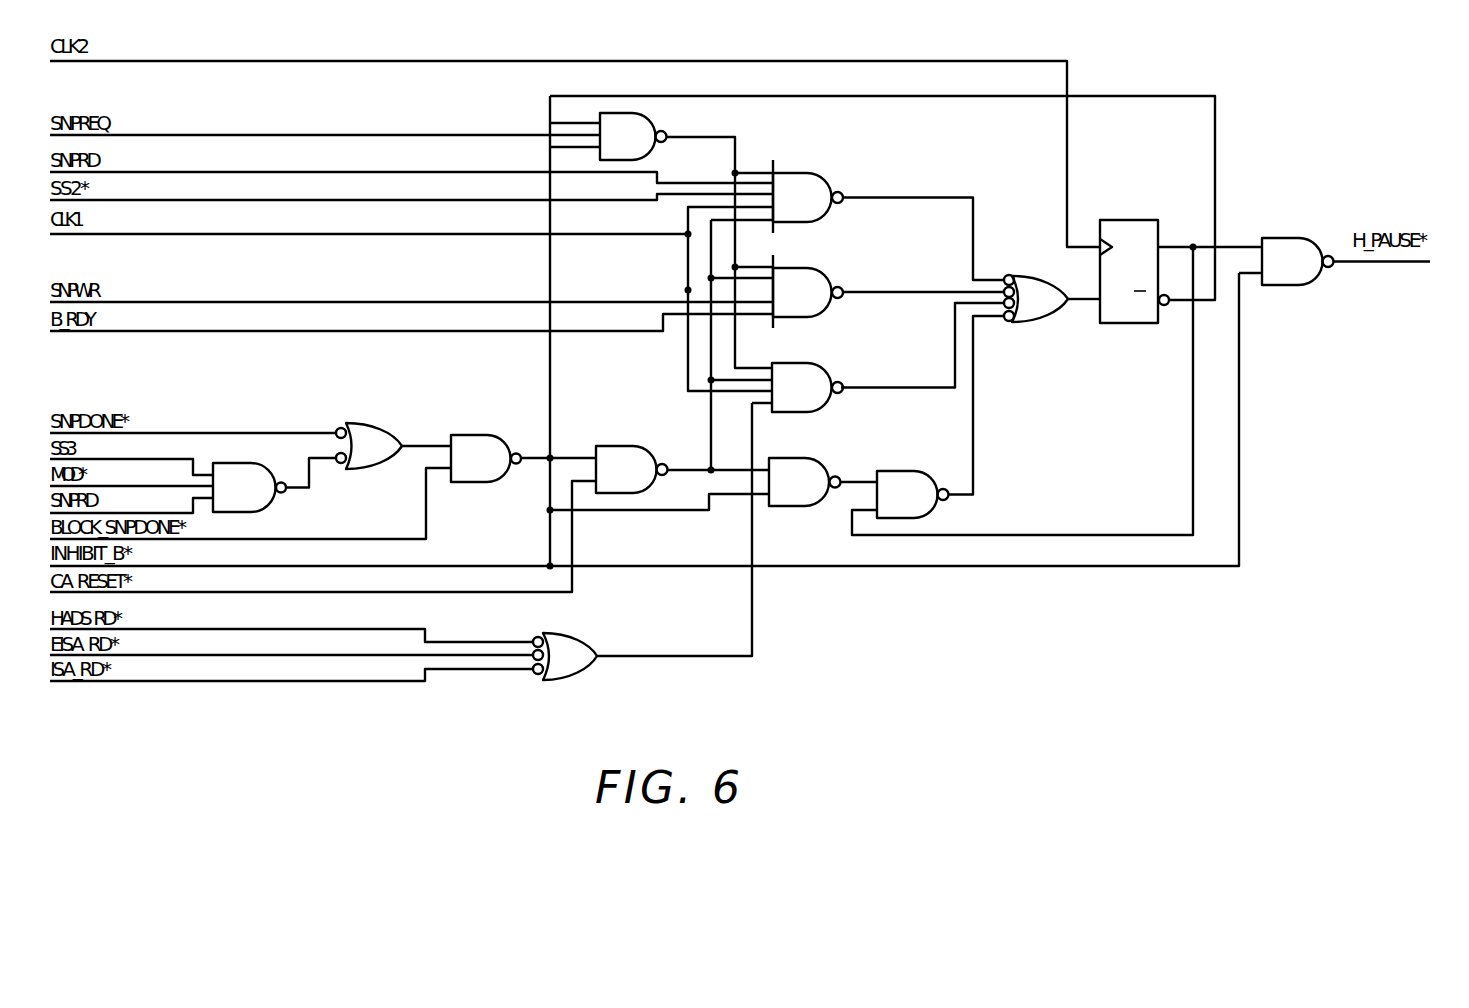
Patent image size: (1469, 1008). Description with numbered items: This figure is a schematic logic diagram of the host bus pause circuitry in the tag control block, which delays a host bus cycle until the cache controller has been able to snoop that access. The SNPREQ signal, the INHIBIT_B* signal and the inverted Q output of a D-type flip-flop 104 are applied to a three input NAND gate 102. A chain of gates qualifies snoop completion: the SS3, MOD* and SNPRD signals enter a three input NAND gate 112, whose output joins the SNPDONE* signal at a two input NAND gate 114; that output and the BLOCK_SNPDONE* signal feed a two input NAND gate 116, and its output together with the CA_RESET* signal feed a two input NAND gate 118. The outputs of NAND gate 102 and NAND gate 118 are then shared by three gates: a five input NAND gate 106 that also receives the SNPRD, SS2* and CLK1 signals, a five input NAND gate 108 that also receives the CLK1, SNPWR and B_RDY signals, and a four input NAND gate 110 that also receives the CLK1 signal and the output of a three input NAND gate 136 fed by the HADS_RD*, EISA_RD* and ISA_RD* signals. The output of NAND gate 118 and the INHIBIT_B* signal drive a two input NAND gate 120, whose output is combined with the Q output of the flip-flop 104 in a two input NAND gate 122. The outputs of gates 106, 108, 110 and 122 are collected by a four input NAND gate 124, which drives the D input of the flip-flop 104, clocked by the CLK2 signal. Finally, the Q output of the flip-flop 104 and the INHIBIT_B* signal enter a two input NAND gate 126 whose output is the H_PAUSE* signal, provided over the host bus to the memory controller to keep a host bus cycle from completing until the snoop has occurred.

The three input NAND gate 102 is at (655, 120).
The D-type flip-flop 104 is at (1130, 220).
The five input NAND gate 106 is at (824, 173).
The five input NAND gate 108 is at (824, 268).
The four input NAND gate 110 is at (822, 363).
The three input NAND gate 112 is at (265, 511).
The two input NAND gate 114 is at (370, 423).
The two input NAND gate 116 is at (480, 435).
The two input NAND gate 118 is at (625, 446).
The two input NAND gate 120 is at (820, 458).
The two input NAND gate 122 is at (913, 471).
The four input NAND gate 124 is at (1035, 322).
The two input NAND gate 126 is at (1290, 238).
The three input NAND gate 136 is at (590, 673).